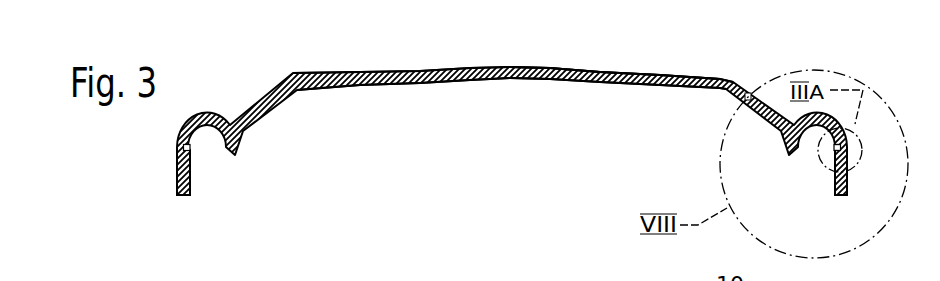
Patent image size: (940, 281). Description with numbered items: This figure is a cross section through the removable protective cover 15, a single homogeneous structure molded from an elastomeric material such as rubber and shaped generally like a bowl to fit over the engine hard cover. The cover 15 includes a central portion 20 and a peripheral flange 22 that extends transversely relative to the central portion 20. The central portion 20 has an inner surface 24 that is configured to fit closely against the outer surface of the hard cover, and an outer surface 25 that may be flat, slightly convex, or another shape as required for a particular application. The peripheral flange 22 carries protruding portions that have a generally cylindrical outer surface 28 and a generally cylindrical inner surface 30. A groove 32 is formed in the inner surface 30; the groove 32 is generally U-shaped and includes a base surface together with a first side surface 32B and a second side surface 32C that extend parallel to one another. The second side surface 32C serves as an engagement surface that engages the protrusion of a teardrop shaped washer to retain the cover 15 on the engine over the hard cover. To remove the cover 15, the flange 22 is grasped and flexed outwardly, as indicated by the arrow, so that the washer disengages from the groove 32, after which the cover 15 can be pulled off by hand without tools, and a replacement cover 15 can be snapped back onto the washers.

The removable protective cover 15 is at (736, 71).
The central portion 20 is at (428, 70).
The peripheral flange 22 is at (175, 175).
The inner surface 24 is at (558, 82).
The outer surface 25 is at (597, 70).
The outer surface 28 is at (850, 172).
The inner surface 30 is at (189, 180).
The groove 32 is at (190, 148).
The first side surface 32B is at (833, 150).
The second side surface 32C is at (835, 153).